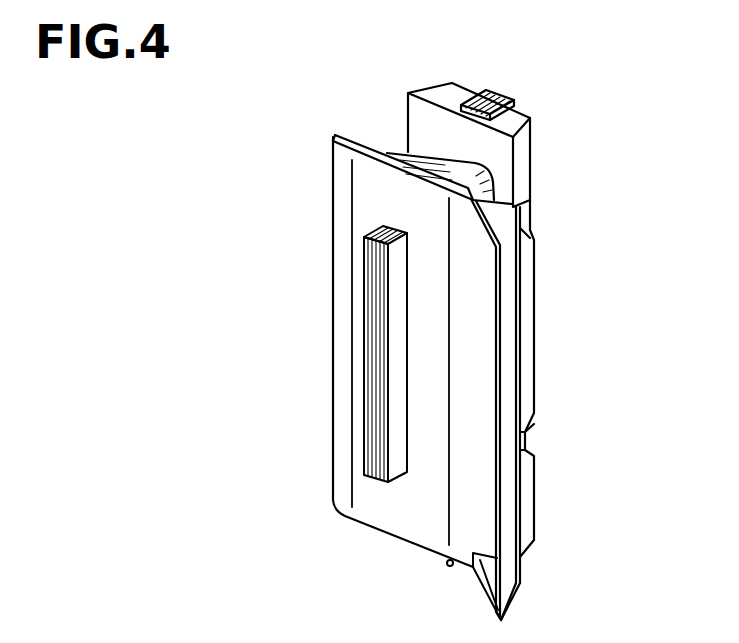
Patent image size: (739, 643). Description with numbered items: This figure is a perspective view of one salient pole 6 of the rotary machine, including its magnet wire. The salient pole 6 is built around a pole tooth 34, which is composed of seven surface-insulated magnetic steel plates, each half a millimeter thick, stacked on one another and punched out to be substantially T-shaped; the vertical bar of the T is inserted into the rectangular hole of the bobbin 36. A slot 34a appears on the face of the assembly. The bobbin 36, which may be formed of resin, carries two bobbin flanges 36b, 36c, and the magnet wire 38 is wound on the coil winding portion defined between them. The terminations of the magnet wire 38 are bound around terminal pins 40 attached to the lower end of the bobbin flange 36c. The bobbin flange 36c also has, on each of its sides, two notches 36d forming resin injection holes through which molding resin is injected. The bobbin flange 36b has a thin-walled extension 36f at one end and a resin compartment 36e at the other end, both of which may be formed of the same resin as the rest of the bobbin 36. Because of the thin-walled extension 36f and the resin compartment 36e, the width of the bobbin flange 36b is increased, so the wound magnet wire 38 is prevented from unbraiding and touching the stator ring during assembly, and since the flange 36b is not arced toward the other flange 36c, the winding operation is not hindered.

The salient pole 6 is at (576, 158).
The pole tooth 34 is at (513, 100).
The connector slot 34a is at (372, 410).
The bobbin 36 is at (535, 358).
The bobbin flange 36b is at (408, 523).
The bobbin flange 36c is at (528, 297).
The notch 36d is at (528, 215).
The resin compartment 36e is at (512, 528).
The thin-walled extension 36f is at (333, 137).
The magnet wire 38 is at (413, 148).
The terminal pin 40 is at (449, 566).